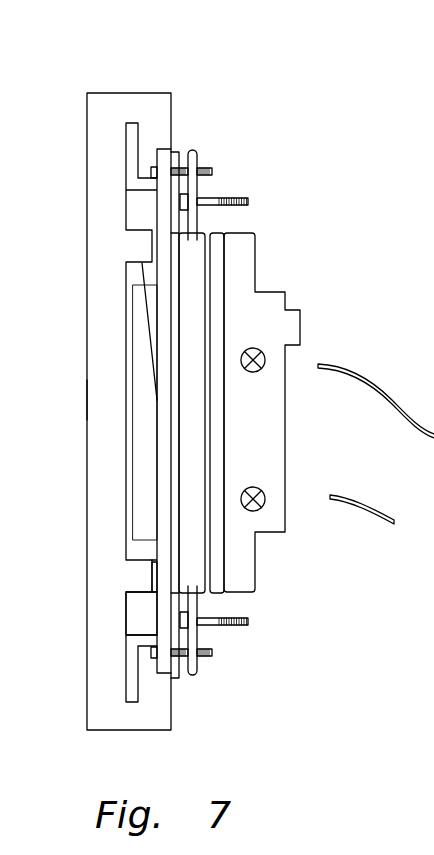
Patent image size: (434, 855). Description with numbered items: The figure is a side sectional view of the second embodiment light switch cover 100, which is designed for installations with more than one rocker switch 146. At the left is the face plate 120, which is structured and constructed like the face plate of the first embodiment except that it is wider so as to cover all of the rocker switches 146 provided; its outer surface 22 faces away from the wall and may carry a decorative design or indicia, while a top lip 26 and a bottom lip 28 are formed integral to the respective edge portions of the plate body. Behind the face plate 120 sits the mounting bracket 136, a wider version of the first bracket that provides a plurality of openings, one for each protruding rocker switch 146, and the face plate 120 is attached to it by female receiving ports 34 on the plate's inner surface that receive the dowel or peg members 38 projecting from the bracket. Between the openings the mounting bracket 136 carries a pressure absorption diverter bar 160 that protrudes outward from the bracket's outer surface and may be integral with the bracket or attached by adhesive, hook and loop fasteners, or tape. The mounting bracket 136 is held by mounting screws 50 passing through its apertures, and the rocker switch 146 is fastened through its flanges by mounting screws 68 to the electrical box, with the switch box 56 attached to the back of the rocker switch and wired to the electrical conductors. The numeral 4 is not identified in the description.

The second embodiment light switch cover 100 is at (320, 100).
The outer surface 22 is at (78, 455).
The face plate 120 is at (112, 690).
The support member 4 is at (43, 398).
The top lip 26 is at (147, 152).
The bottom lip 28 is at (152, 690).
The rocker switch 146 is at (148, 278).
The pressure absorption diverter bar 160 is at (133, 368).
The peg member 38 is at (155, 558).
The female receiving port 34 is at (142, 582).
The mounting bracket 136 is at (163, 676).
The mounting screw 50 is at (200, 163).
The mounting screw 68 is at (248, 201).
The switch box 56 is at (288, 297).